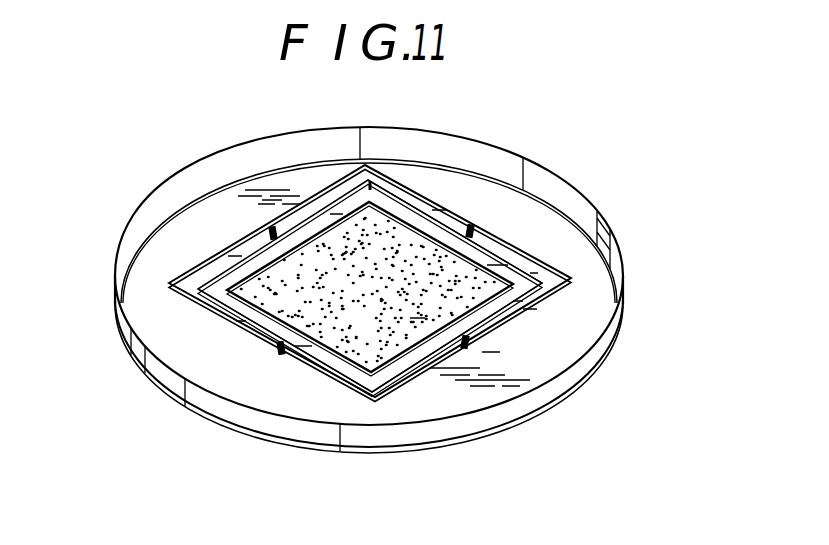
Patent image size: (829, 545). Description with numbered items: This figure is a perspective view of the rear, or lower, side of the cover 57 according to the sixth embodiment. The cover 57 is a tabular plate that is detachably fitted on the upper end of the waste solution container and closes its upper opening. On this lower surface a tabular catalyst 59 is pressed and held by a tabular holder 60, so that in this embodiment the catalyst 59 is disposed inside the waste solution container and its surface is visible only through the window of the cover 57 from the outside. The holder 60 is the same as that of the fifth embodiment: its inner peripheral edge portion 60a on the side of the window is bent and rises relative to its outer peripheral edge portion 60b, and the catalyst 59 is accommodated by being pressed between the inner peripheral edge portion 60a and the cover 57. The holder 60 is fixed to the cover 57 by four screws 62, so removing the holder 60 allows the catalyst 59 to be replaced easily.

The cover 57 is at (632, 234).
The catalyst 59 is at (363, 330).
The holder 60 is at (503, 215).
The inner peripheral edge portion 60a is at (273, 323).
The outer peripheral edge portion 60b is at (553, 283).
The screws 62 is at (467, 346).